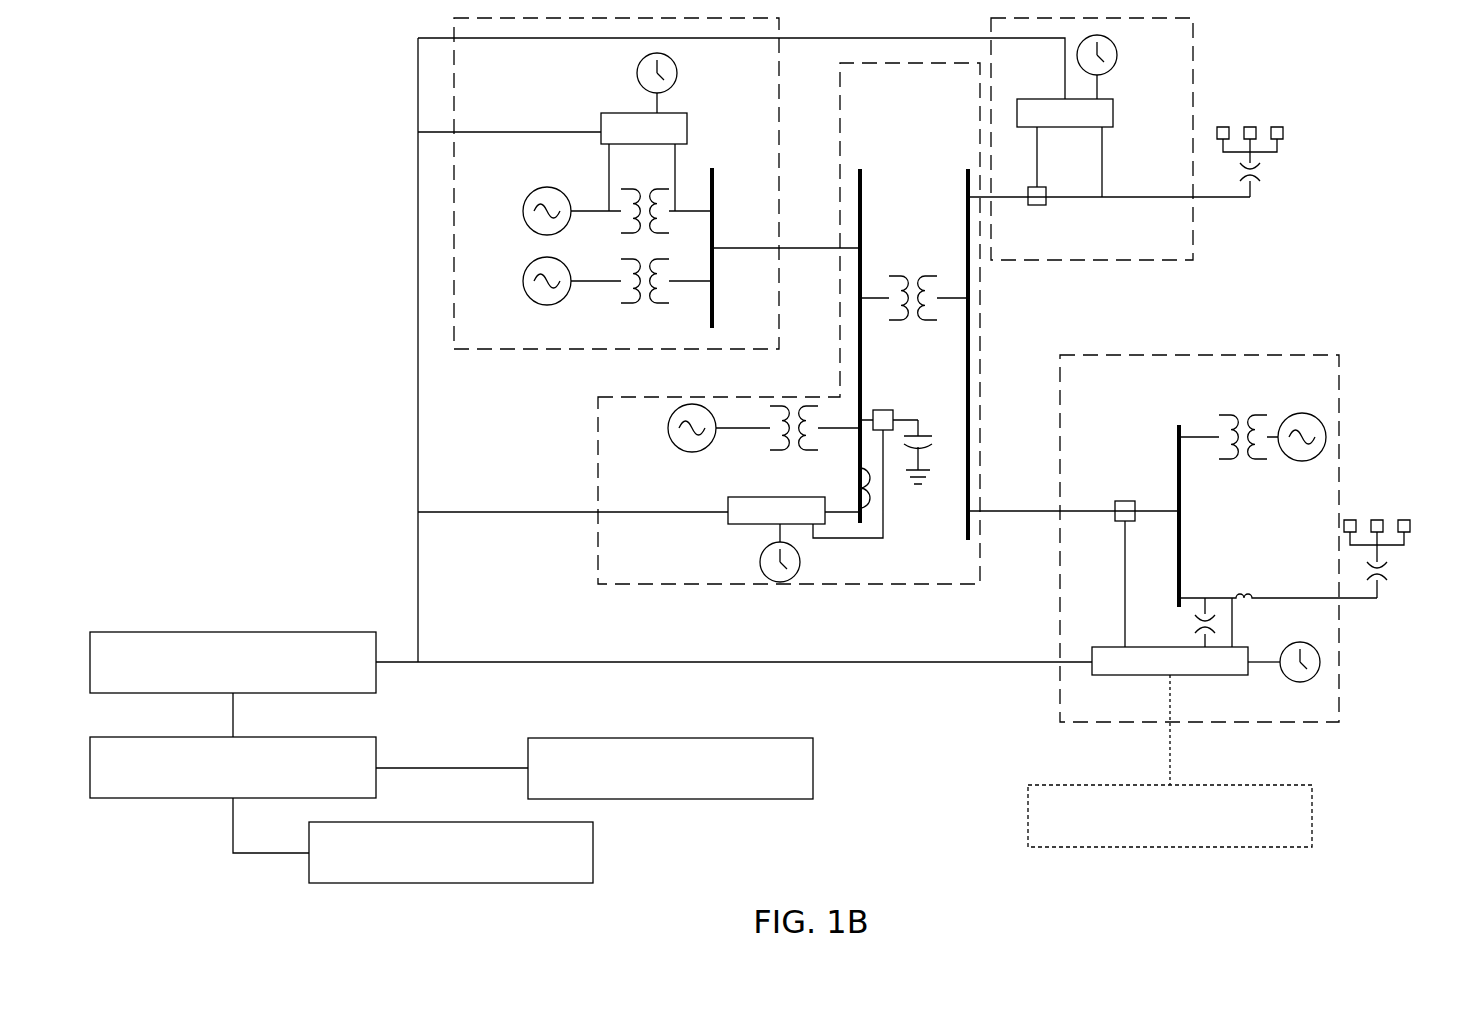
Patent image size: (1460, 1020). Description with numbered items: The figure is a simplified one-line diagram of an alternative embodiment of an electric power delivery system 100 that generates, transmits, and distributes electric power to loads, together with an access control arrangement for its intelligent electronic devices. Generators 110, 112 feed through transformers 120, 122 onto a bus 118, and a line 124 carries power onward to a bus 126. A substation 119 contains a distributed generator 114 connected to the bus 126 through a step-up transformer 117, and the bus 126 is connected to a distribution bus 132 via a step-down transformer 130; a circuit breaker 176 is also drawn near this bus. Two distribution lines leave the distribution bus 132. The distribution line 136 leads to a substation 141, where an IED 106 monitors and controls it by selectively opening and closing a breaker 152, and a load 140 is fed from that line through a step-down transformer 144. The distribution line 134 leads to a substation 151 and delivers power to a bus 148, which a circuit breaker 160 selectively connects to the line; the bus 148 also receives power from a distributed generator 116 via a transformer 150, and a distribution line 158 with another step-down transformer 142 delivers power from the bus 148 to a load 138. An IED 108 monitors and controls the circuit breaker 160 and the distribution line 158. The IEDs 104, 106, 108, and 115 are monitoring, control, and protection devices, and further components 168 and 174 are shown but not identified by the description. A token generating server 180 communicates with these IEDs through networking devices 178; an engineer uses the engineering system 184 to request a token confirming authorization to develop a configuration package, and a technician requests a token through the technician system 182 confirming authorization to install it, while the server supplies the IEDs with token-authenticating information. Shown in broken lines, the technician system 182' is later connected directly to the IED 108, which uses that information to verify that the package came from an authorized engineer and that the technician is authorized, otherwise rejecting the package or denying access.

The electric power delivery system 100 is at (238, 69).
The IED 104 is at (616, 113).
The IED 106 is at (1030, 99).
The IED 108 is at (1217, 675).
The generator 110 is at (523, 211).
The generator 112 is at (523, 281).
The generator 114 is at (668, 428).
The IED 115 is at (806, 497).
The distributed generator 116 is at (1290, 462).
The step-up transformer 117 is at (772, 447).
The bus 118 is at (714, 304).
The substation 119 is at (722, 584).
The transformer 120 is at (620, 228).
The transformer 122 is at (645, 303).
The line 124 is at (800, 256).
The bus 126 is at (864, 322).
The step-down transformer 130 is at (916, 277).
The distribution bus 132 is at (966, 498).
The distribution line 134 is at (1072, 513).
The distribution line 136 is at (1030, 204).
The load 138 is at (1375, 520).
The load 140 is at (1292, 129).
The substation 141 is at (1172, 262).
The step-down transformer 142 is at (1388, 574).
The step-down transformer 144 is at (1264, 172).
The bus 148 is at (1177, 427).
The transformer 150 is at (1240, 416).
The substation 151 is at (1272, 722).
The breaker 152 is at (1048, 200).
The distribution line 158 is at (1270, 597).
The circuit breaker 160 is at (1120, 502).
The time source 168 is at (678, 72).
The capacitor bank 174 is at (925, 432).
The circuit breaker 176 is at (890, 410).
The networking devices 178 is at (215, 687).
The token generating server 180 is at (215, 793).
The technician system 182 is at (670, 768).
The technician system 182' is at (1170, 816).
The engineering system 184 is at (433, 878).